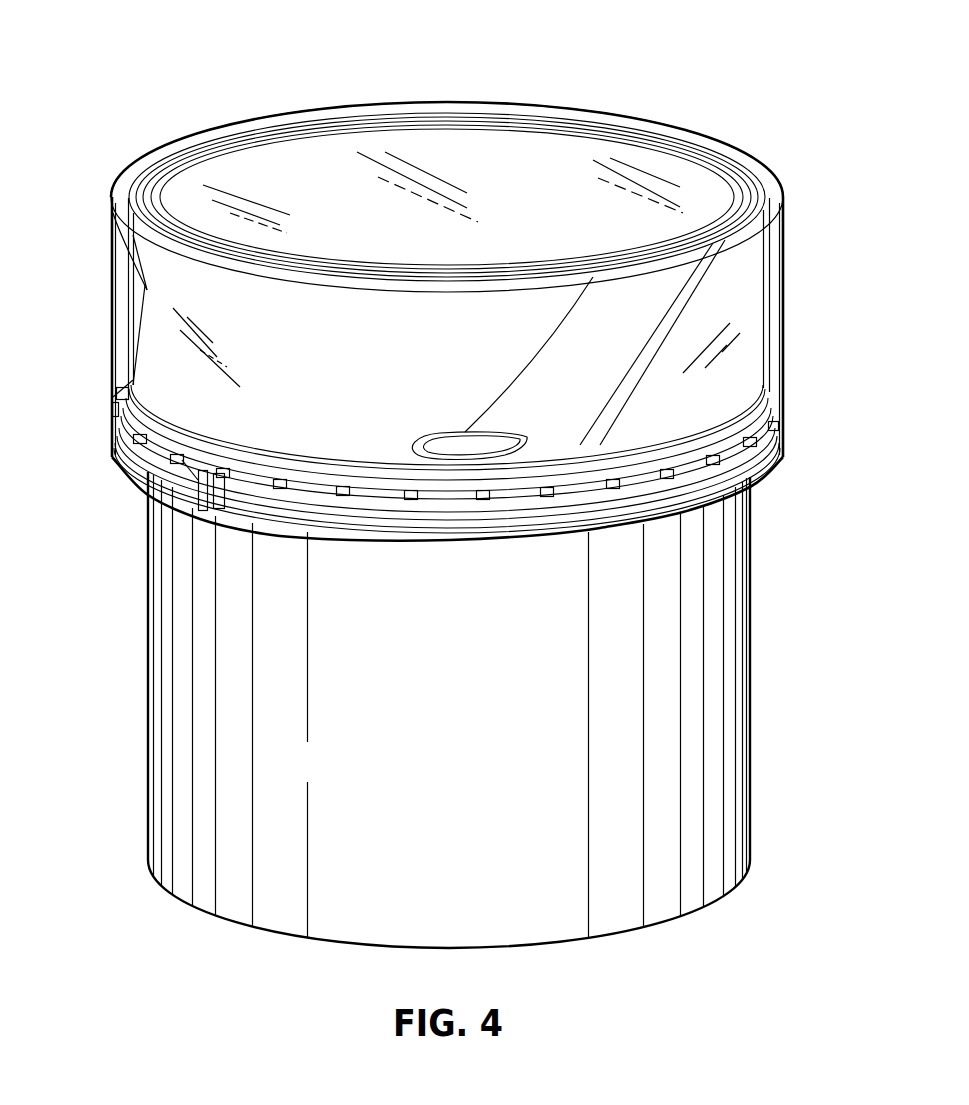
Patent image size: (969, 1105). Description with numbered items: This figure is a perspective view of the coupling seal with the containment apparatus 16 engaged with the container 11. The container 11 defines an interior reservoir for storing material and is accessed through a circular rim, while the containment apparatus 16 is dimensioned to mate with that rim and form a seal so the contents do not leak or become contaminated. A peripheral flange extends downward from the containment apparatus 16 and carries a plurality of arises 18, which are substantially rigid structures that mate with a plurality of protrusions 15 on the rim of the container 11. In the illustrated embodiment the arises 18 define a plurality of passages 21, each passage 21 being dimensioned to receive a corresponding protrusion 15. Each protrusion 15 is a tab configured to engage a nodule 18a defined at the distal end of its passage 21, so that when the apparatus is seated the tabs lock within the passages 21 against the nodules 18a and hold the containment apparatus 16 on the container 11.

The container 11 is at (750, 817).
The protrusion 15 is at (488, 447).
The containment apparatus 16 is at (786, 293).
The arises 18 is at (173, 372).
The nodule 18a is at (453, 427).
The passage 21 is at (613, 343).